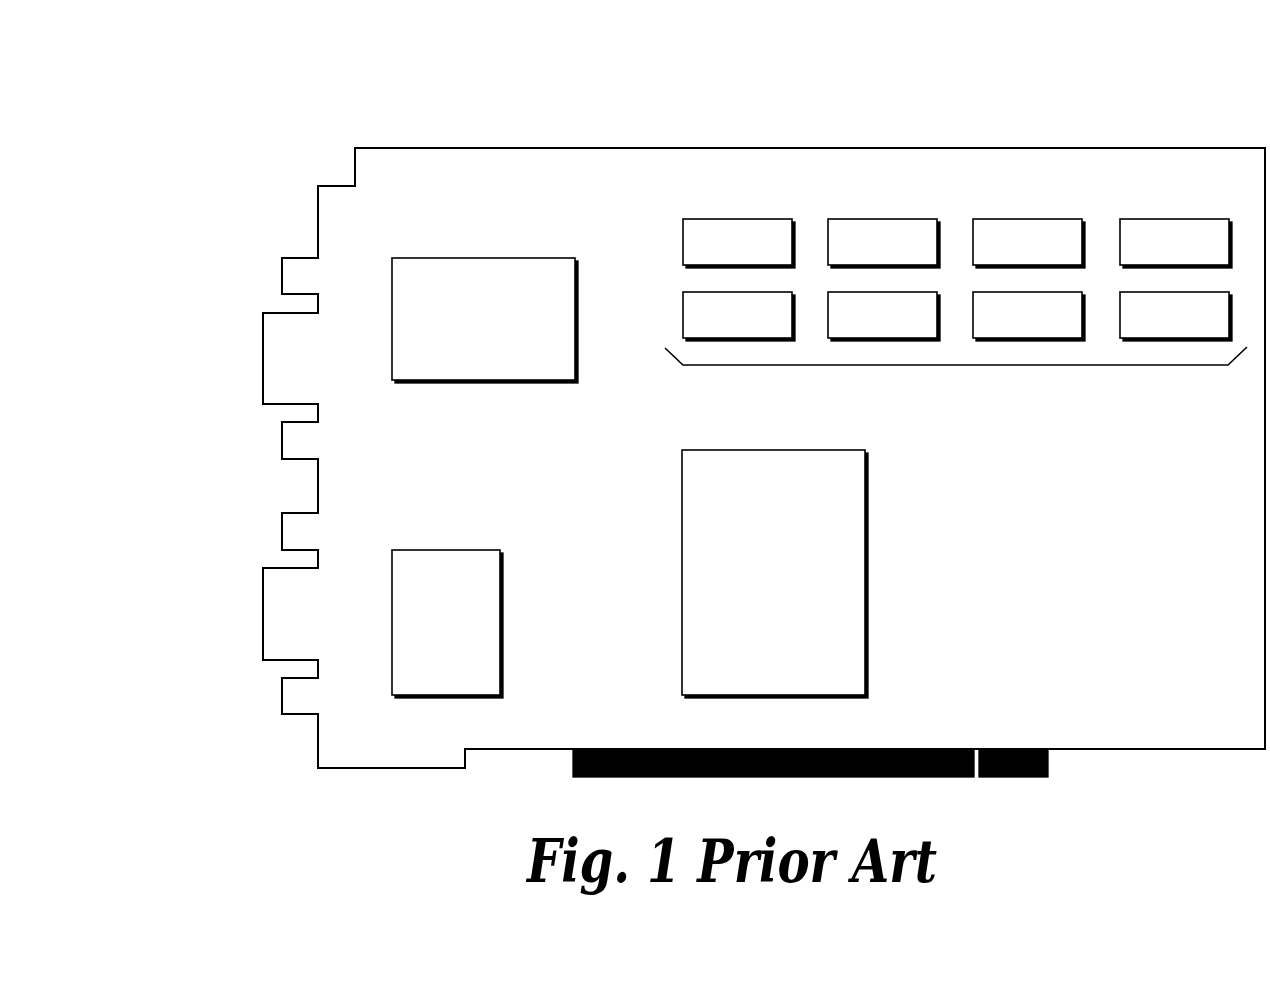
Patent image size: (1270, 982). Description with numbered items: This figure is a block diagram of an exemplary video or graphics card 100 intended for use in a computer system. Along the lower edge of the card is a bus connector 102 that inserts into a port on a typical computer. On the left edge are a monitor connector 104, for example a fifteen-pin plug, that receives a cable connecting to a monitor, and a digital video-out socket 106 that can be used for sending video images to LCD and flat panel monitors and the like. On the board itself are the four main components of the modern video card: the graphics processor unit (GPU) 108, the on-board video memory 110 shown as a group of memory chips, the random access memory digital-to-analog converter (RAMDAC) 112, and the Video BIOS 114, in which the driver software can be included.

The video card 100 is at (396, 64).
The bus connector 102 is at (665, 778).
The monitor connector 104 is at (263, 568).
The digital video-out socket 106 is at (263, 313).
The graphics processor unit 108 is at (772, 450).
The video memory 110 is at (978, 396).
The random access memory digital-to-analog converter 112 is at (482, 258).
The Video BIOS 114 is at (447, 550).